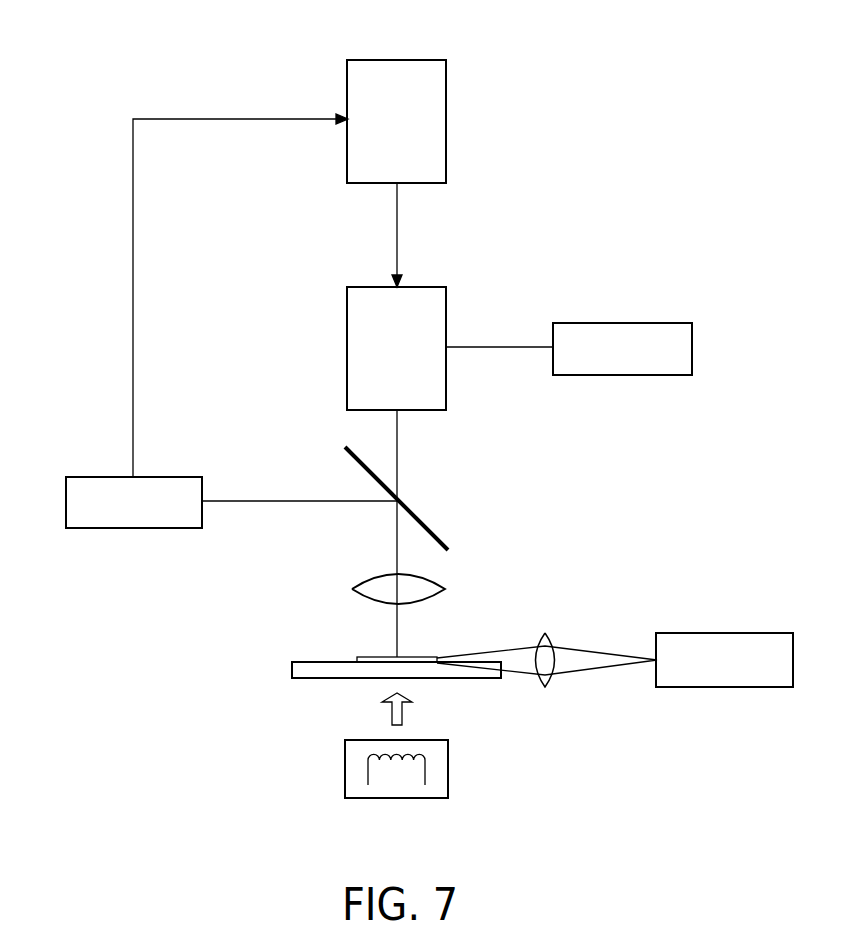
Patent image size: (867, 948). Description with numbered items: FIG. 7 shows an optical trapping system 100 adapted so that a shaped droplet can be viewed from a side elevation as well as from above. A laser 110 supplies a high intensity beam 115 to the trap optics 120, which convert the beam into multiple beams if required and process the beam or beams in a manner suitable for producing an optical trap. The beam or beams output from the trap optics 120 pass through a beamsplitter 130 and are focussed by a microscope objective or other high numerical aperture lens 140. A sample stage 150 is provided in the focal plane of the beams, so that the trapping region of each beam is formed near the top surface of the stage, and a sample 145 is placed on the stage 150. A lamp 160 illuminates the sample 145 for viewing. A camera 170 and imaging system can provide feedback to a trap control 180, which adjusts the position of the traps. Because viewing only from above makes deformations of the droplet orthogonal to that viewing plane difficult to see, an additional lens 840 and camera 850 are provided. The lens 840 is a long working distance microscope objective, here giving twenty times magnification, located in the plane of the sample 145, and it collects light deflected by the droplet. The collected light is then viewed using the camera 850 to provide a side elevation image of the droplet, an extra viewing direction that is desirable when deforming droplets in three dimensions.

The system 100 is at (618, 57).
The laser 110 is at (692, 323).
The beam 115 is at (470, 347).
The trap optics 120 is at (446, 287).
The beamsplitter 130 is at (438, 533).
The microscope objective 140 is at (352, 588).
The sample 145 is at (357, 658).
The sample stage 150 is at (292, 678).
The lamp 160 is at (448, 740).
The camera 170 is at (66, 477).
The trap control 180 is at (446, 60).
The lens 840 is at (549, 633).
The camera 850 is at (720, 633).